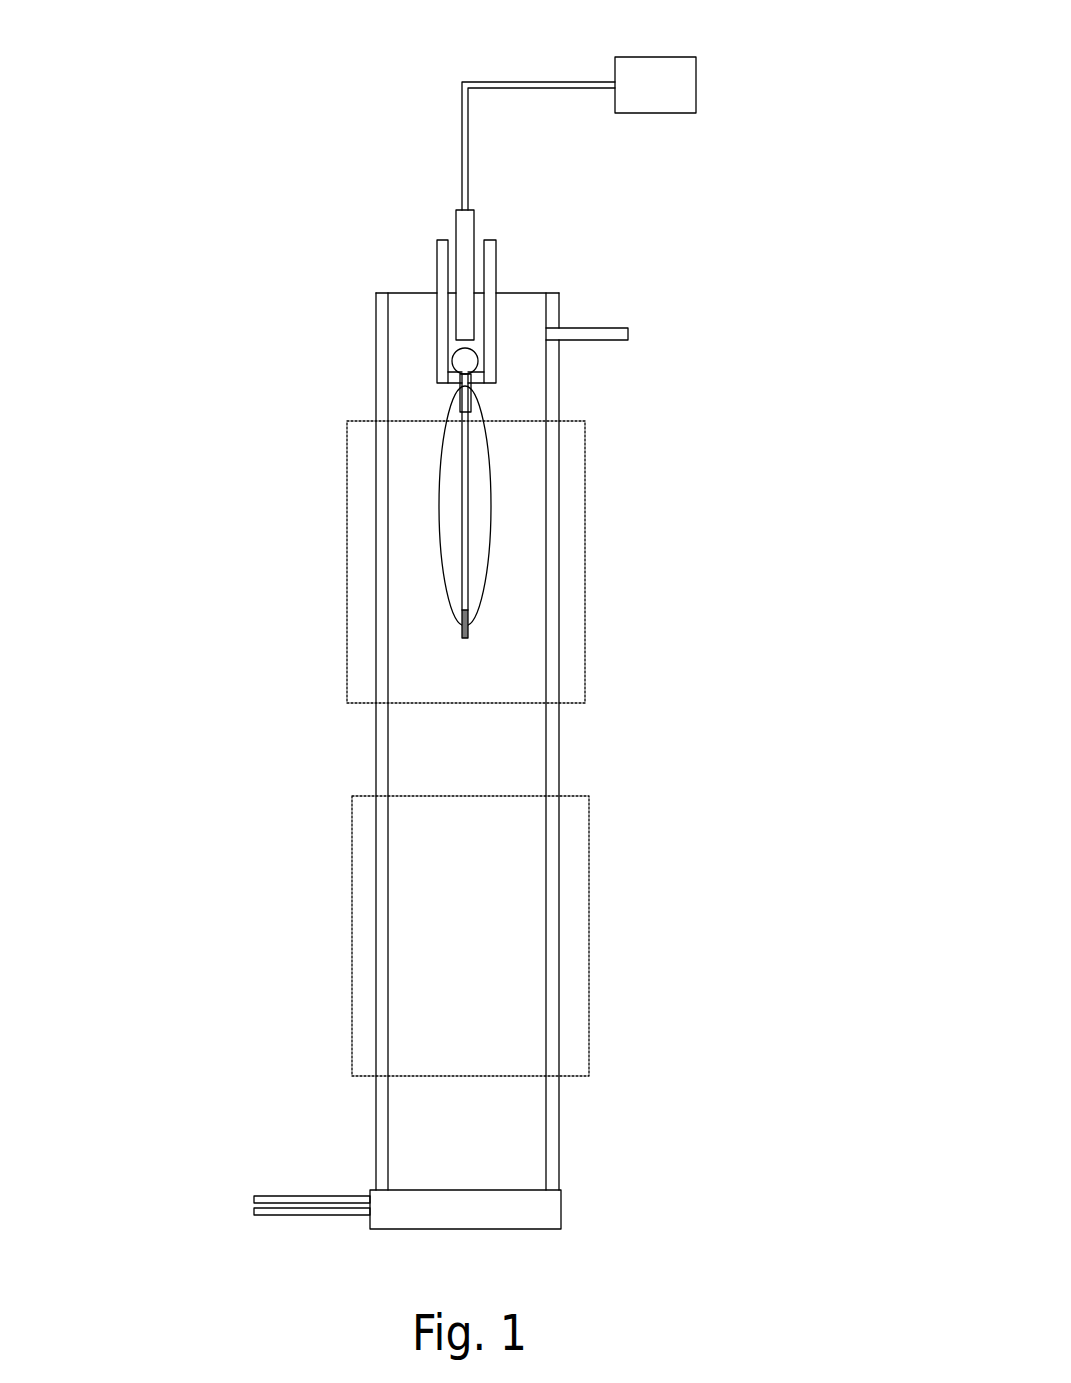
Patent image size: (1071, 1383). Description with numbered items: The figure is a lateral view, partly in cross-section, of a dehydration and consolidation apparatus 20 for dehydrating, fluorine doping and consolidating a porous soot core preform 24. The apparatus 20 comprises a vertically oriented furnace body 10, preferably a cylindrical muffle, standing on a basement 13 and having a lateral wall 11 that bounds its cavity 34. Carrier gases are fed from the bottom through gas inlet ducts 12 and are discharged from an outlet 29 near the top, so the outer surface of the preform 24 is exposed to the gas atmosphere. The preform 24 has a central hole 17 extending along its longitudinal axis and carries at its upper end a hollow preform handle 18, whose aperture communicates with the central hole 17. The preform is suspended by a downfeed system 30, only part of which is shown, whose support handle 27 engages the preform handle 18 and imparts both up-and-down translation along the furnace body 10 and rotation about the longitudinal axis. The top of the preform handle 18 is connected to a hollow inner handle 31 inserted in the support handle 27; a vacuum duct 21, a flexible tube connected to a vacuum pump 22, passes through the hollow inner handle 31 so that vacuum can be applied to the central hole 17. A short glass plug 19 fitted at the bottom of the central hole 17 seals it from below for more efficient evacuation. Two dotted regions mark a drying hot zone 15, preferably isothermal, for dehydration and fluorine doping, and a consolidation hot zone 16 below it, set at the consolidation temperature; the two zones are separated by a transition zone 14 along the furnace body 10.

The furnace body 10 is at (555, 378).
The lateral wall 11 is at (382, 1100).
The gas inlet ducts 12 is at (254, 1199).
The basement 13 is at (550, 1209).
The transition zone 14 is at (558, 753).
The drying hot zone 15 is at (585, 590).
The consolidation hot zone 16 is at (589, 881).
The central hole 17 is at (461, 527).
The preform handle 18 is at (453, 360).
The plug 19 is at (461, 636).
The dehydration and consolidation apparatus 20 is at (215, 178).
The vacuum duct 21 is at (466, 160).
The vacuum pump 22 is at (651, 57).
The porous soot core preform 24 is at (488, 481).
The support handle 27 is at (497, 260).
The outlet 29 is at (618, 330).
The downfeed system 30 is at (437, 250).
The hollow inner handle 31 is at (455, 225).
The cavity 34 is at (415, 318).